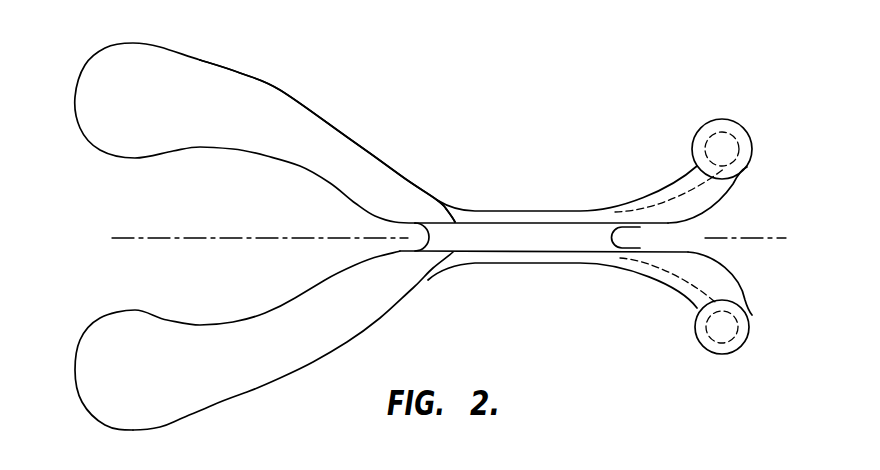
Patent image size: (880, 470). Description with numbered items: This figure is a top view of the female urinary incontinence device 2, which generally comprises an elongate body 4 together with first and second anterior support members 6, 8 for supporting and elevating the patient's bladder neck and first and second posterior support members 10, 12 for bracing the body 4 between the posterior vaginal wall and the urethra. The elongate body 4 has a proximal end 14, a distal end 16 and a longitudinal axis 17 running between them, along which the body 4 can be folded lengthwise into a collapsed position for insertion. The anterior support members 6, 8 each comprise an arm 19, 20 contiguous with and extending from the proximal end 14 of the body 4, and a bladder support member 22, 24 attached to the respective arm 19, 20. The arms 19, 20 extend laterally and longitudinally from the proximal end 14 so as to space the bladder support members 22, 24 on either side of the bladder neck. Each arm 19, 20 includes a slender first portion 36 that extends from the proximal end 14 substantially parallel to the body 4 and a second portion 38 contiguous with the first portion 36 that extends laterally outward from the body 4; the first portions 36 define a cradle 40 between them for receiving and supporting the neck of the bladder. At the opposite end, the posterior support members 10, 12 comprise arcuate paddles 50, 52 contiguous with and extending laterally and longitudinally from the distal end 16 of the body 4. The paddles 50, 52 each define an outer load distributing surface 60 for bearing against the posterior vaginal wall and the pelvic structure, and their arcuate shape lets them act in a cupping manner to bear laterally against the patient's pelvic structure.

The female urinary incontinence device 2 is at (78, 253).
The elongate body 4 is at (528, 207).
The first anterior support member 6 is at (764, 130).
The second anterior support member 8 is at (775, 303).
The first posterior support member 10 is at (128, 32).
The second posterior support member 12 is at (115, 436).
The proximal end 14 is at (607, 227).
The distal end 16 is at (431, 242).
The longitudinal axis 17 is at (783, 238).
The arm 19 is at (670, 190).
The arm 20 is at (666, 286).
The bladder support member 22 is at (732, 119).
The bladder support member 24 is at (711, 354).
The first portion 36 is at (670, 227).
The second portion 38 is at (737, 188).
The cradle 40 is at (634, 237).
The arcuate paddle 50 is at (277, 113).
The arcuate paddle 52 is at (320, 343).
The outer load distributing surface 60 is at (203, 58).